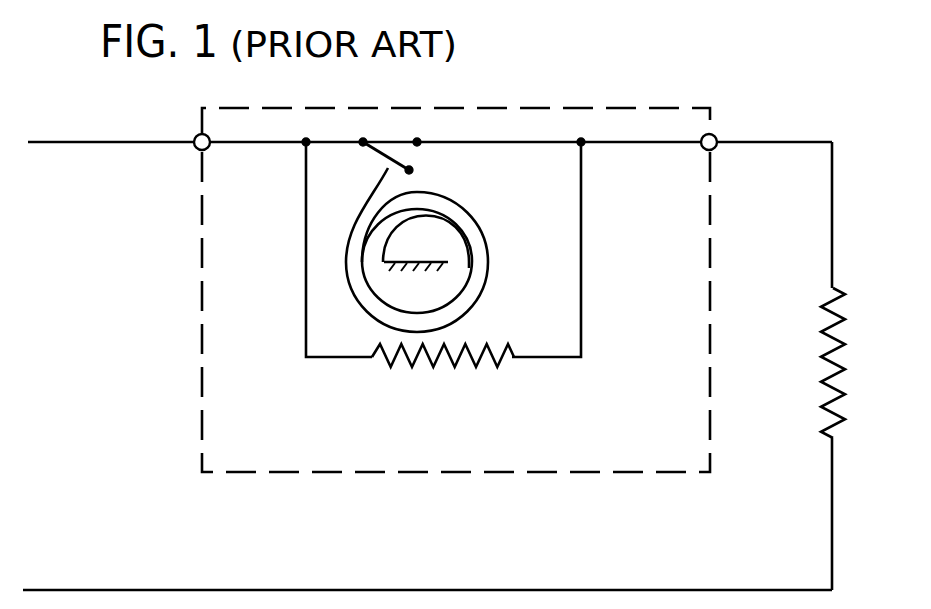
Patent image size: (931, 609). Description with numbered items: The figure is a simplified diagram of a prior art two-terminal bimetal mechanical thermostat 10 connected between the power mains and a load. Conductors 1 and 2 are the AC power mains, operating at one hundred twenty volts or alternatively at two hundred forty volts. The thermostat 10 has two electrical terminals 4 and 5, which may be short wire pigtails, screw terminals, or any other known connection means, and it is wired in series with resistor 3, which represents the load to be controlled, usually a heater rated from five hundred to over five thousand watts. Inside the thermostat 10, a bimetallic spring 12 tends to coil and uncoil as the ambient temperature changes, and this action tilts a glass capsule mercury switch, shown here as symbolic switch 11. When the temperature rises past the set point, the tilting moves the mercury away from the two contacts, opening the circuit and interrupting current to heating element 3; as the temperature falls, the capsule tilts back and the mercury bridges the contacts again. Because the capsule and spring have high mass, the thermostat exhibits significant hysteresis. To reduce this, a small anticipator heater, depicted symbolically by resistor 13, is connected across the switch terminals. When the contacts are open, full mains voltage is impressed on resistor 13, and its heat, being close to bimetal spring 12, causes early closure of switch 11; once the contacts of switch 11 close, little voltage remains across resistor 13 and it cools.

The conductor 1 is at (88, 140).
The conductor 2 is at (88, 588).
The resistor 3 is at (824, 374).
The electrical terminal 4 is at (196, 148).
The electrical terminal 5 is at (714, 148).
The two-terminal mechanical thermostat 10 is at (200, 405).
The switch 11 is at (388, 168).
The bimetallic spring 12 is at (490, 235).
The resistor 13 is at (432, 370).